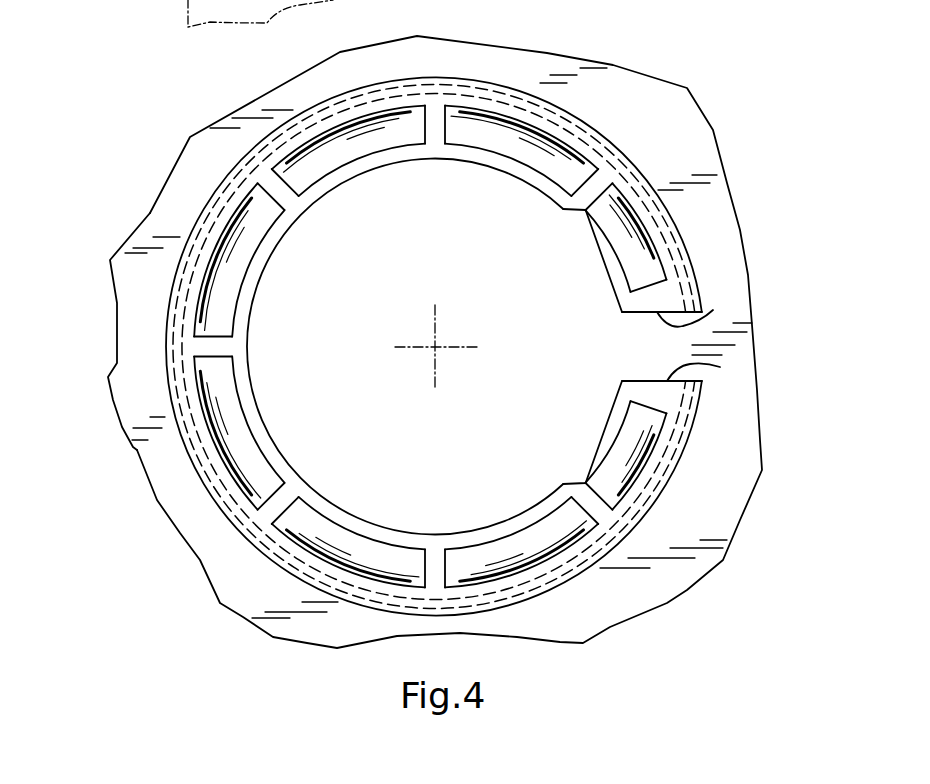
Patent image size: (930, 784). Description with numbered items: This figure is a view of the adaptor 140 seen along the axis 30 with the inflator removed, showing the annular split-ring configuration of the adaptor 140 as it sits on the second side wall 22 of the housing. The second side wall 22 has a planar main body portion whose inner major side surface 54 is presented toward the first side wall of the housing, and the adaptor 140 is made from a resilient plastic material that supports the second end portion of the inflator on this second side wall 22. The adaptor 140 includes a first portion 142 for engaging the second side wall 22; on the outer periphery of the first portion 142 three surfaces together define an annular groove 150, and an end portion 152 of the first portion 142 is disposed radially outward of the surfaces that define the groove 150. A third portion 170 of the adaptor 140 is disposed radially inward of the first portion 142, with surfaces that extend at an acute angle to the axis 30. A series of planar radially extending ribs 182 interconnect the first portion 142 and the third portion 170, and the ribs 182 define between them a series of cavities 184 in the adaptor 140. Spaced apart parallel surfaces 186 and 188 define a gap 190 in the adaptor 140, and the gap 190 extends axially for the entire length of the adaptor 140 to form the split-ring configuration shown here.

The second side wall 22 is at (180, 138).
The inner major side surface 54 is at (132, 277).
The adaptor 140 is at (150, 367).
The first portion 142 is at (437, 100).
The annular groove 150 is at (627, 170).
The end portion 152 is at (583, 113).
The third portion 170 is at (603, 255).
The ribs 182 is at (433, 127).
The cavities 184 is at (232, 432).
The surface 186 is at (713, 310).
The surface 188 is at (720, 367).
The gap 190 is at (747, 328).
The axis 30 is at (440, 348).